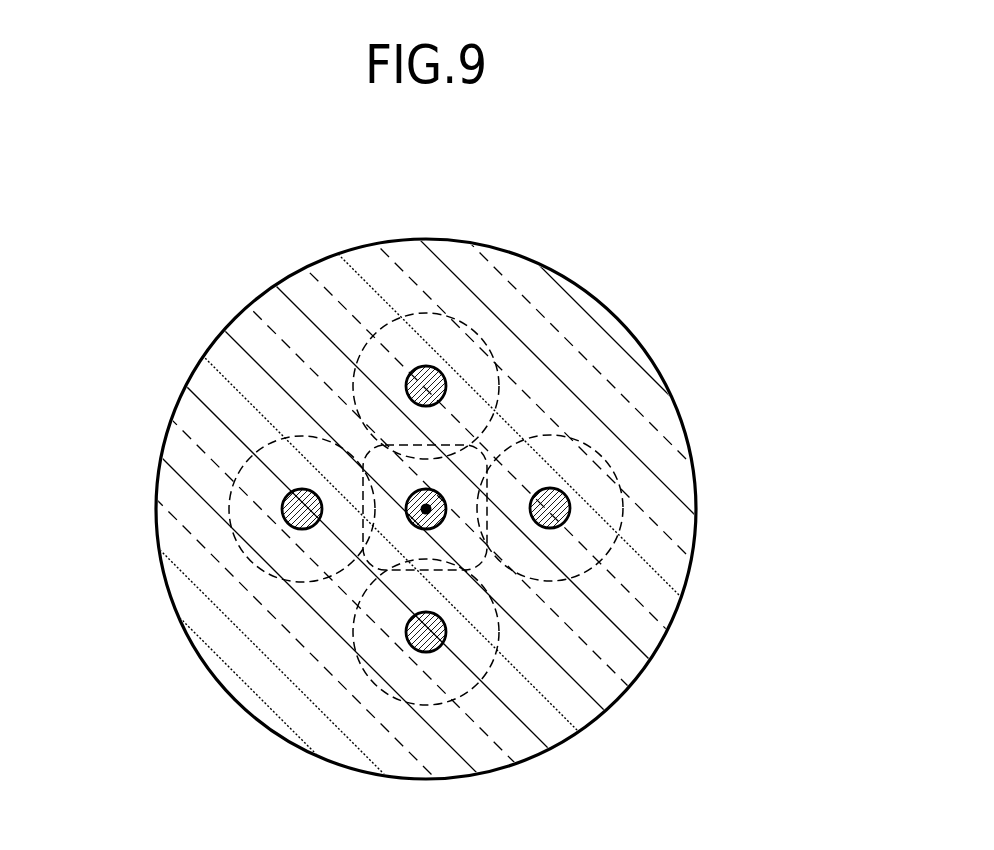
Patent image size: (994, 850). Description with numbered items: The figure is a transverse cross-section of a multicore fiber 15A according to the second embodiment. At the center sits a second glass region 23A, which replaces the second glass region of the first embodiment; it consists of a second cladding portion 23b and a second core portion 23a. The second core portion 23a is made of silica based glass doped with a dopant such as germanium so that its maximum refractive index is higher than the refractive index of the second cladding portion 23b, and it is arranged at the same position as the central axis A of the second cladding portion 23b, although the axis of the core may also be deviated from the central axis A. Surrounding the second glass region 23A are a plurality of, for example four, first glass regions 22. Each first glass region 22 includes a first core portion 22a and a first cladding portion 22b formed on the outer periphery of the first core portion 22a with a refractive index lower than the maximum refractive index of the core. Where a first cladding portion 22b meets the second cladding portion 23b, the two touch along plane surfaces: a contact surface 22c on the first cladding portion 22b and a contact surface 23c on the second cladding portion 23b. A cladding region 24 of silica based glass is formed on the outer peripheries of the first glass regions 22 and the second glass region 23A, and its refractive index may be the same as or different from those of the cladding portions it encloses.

The multicore fiber 15A is at (587, 221).
The cladding region 24 is at (462, 241).
The second glass region 23A is at (813, 317).
The second core portion 23a is at (432, 502).
The second cladding portion 23b is at (505, 437).
The contact surface 23c is at (490, 489).
The first glass region 22 is at (813, 492).
The first core portion 22a is at (570, 502).
The first cladding portion 22b is at (595, 521).
The contact surface 22c is at (478, 526).
The central axis A is at (428, 511).